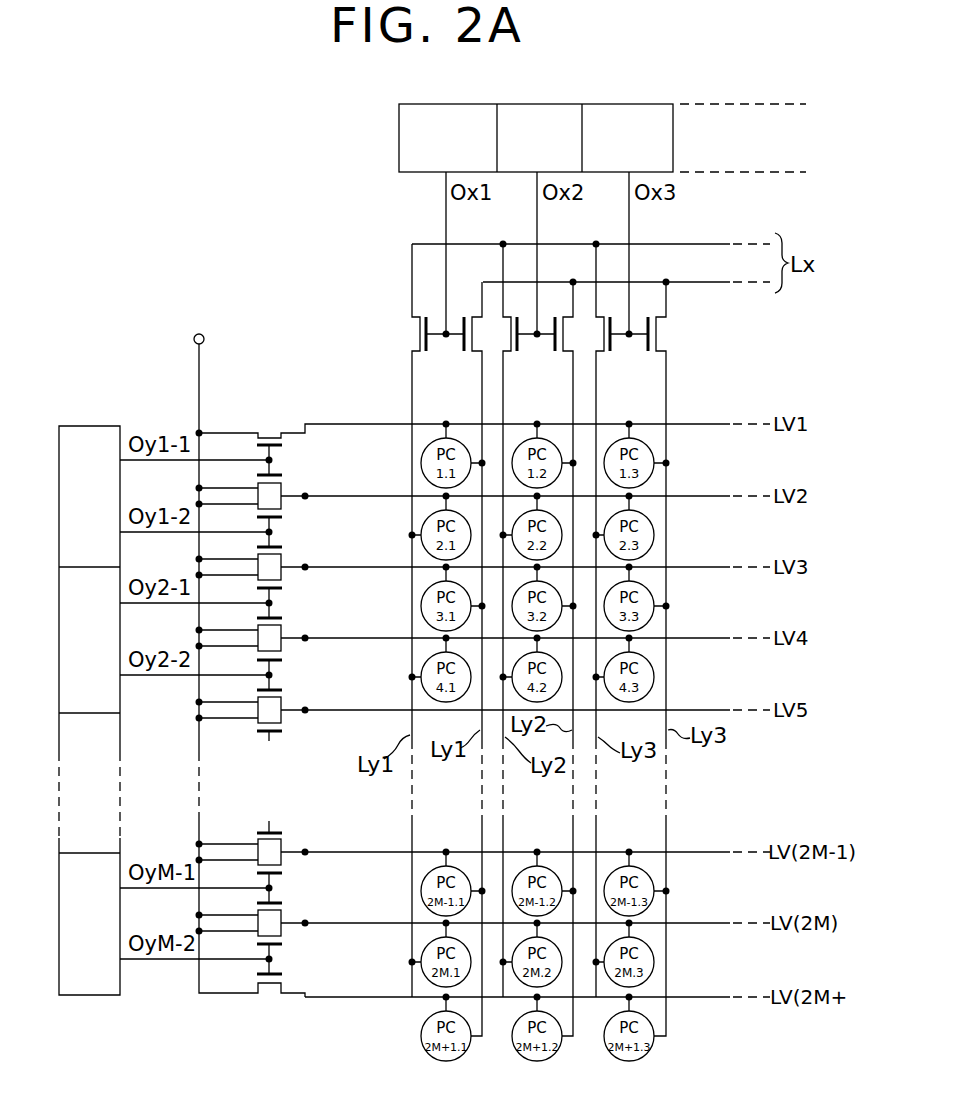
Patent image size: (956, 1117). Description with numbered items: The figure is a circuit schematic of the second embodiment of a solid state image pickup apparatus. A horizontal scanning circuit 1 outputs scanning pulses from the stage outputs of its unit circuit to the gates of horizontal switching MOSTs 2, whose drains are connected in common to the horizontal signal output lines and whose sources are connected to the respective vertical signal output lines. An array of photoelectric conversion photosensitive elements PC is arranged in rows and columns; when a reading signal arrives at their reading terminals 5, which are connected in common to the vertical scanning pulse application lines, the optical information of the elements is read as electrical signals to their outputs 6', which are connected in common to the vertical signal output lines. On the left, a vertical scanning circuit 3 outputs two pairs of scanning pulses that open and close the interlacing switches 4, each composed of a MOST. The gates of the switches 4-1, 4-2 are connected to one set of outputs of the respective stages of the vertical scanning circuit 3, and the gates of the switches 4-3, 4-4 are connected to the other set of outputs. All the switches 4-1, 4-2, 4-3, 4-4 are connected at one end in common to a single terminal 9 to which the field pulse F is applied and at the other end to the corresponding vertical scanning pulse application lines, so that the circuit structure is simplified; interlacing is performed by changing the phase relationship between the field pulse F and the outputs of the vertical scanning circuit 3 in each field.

The horizontal scanning circuit 1 is at (399, 133).
The horizontal switching MOST 2 is at (412, 338).
The vertical scanning circuit 3 is at (88, 426).
The interlacing switches 4 is at (275, 683).
The interlacing selector switch 4-1 is at (284, 445).
The interlacing selector switch 4-2 is at (284, 475).
The interlacing selector switch 4-3 is at (284, 517).
The interlacing selector switch 4-4 is at (284, 547).
The reading terminal 5 is at (445, 424).
The output 6' is at (541, 737).
The terminal 9 is at (205, 340).